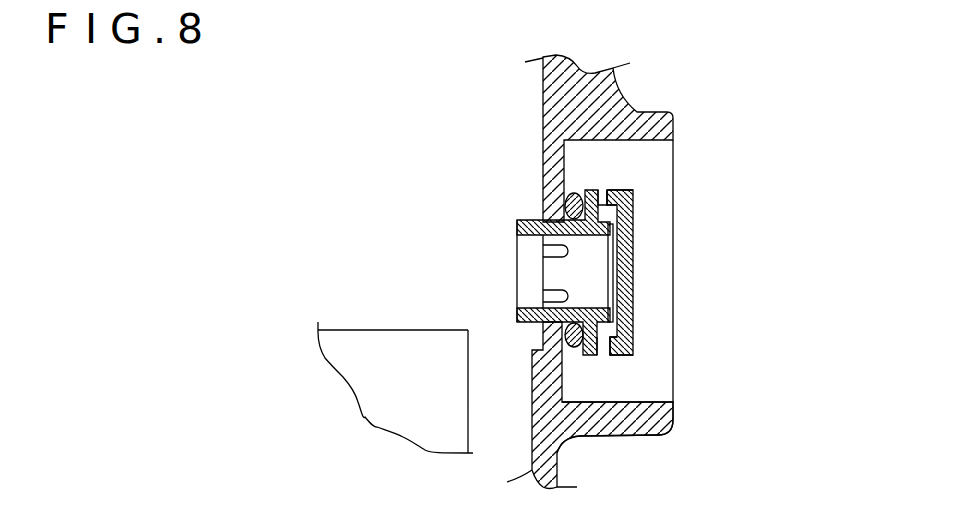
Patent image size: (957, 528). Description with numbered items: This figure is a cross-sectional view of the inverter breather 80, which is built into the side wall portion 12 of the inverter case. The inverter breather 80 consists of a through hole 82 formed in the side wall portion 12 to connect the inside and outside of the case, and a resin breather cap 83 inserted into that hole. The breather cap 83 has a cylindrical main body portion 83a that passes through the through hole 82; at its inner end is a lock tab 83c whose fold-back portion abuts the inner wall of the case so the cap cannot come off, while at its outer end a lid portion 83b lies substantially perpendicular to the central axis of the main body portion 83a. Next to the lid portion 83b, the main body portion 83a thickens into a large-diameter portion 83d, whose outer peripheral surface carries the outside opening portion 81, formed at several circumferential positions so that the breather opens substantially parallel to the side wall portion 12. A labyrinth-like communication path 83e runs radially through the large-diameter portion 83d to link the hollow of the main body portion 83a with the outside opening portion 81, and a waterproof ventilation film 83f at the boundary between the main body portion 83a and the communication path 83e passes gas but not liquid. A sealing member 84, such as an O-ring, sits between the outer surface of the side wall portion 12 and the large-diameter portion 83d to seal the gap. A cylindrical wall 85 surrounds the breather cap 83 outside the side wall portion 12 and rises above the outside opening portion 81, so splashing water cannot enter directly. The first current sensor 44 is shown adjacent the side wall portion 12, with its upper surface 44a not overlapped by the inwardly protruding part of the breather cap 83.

The side wall portion 12 is at (543, 97).
The first current sensor 44 is at (370, 368).
The upper surface 44a is at (358, 330).
The inverter breather 80 is at (609, 278).
The outside opening portion 81 is at (608, 182).
The through hole 82 is at (525, 296).
The breather cap 83 is at (673, 277).
The main body portion 83a is at (553, 309).
The lid portion 83b is at (633, 325).
The lock tab 83c is at (543, 220).
The large-diameter portion 83d is at (591, 357).
The communication path 83e is at (614, 212).
The waterproof ventilation film 83f is at (613, 243).
The sealing member 84 is at (568, 194).
The cylindrical wall 85 is at (673, 414).